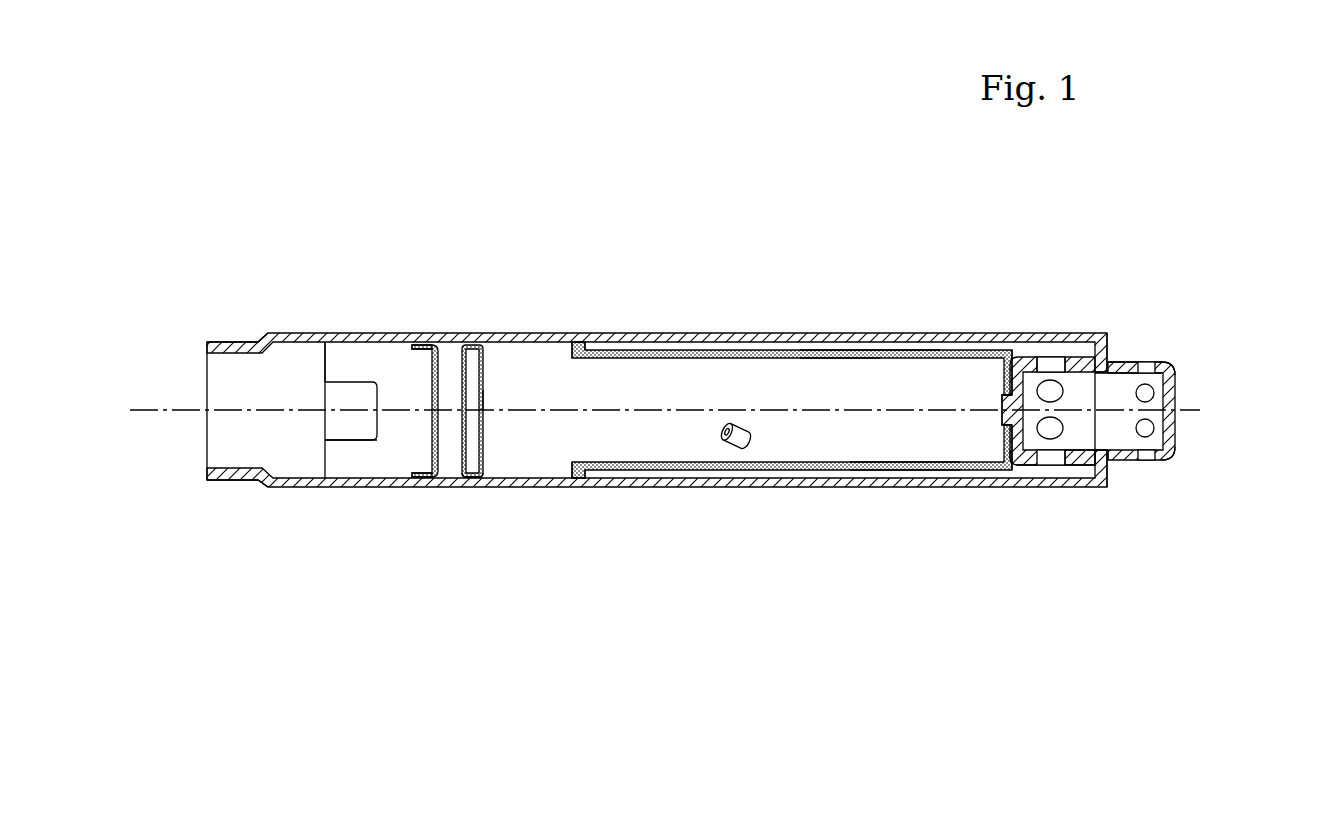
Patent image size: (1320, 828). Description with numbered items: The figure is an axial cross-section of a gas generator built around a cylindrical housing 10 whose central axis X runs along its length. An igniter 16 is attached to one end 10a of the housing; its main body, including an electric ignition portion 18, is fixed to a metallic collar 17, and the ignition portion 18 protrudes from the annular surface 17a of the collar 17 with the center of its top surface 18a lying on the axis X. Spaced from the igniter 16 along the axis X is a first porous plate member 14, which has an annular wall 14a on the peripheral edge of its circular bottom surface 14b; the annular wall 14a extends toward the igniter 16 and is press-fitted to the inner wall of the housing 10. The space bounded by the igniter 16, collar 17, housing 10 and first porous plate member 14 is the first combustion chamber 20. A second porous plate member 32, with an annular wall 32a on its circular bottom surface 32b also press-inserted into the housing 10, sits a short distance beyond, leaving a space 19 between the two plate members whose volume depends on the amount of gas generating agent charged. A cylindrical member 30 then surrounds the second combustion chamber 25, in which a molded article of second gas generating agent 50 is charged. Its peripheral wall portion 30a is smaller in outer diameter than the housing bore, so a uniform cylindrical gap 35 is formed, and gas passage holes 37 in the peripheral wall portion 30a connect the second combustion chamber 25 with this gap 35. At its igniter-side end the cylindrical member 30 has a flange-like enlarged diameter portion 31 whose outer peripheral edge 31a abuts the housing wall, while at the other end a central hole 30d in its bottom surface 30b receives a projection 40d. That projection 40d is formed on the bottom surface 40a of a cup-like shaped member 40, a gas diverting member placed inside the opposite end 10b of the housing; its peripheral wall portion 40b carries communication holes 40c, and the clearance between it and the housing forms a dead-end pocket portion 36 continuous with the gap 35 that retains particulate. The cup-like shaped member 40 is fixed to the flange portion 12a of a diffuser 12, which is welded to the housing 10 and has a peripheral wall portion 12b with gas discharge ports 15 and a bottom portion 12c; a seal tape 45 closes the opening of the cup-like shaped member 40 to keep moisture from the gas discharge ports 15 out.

The cylindrical housing 10 is at (658, 333).
The one end of cylindrical housing 10a is at (237, 340).
The opposite end of cylindrical housing 10b is at (1097, 488).
The diffuser 12 is at (1181, 363).
The flange portion 12a is at (1108, 466).
The peripheral wall portion 12b is at (1175, 455).
The bottom portion 12c is at (1176, 374).
The first porous plate member 14 is at (428, 382).
The annular wall 14a is at (420, 474).
The circular bottom surface 14b is at (438, 378).
The gas discharge ports 15 is at (1143, 362).
The igniter 16 is at (224, 433).
The collar 17 is at (290, 462).
The annular surface of igniter collar 17a is at (325, 357).
The ignition portion 18 is at (338, 434).
The top surface of ignition portion 18a is at (375, 434).
The space 19 is at (455, 438).
The first combustion chamber 20 is at (395, 378).
The second combustion chamber 25 is at (750, 397).
The cylindrical member 30 is at (741, 342).
The peripheral wall portion 30a is at (903, 352).
The bottom surface 30b is at (1002, 372).
The central hole 30d is at (1004, 385).
The enlarged diameter portion 31 is at (575, 477).
The outer peripheral edge 31a is at (572, 345).
The second porous plate member 32 is at (488, 367).
The annular wall 32a is at (465, 474).
The circular bottom surface 32b is at (484, 398).
The cylindrical gap 35 is at (838, 350).
The pocket portion 36 is at (1032, 350).
The gas passage holes 37 is at (860, 482).
The cup-like shaped member 40 is at (1076, 356).
The bottom surface 40a is at (1008, 462).
The peripheral wall portion 40b is at (1070, 458).
The communication holes 40c is at (1050, 365).
The projection 40d is at (1003, 420).
The seal tape 45 is at (1115, 368).
The molded article of second gas generating agent 50 is at (750, 445).
The central axis X is at (674, 413).